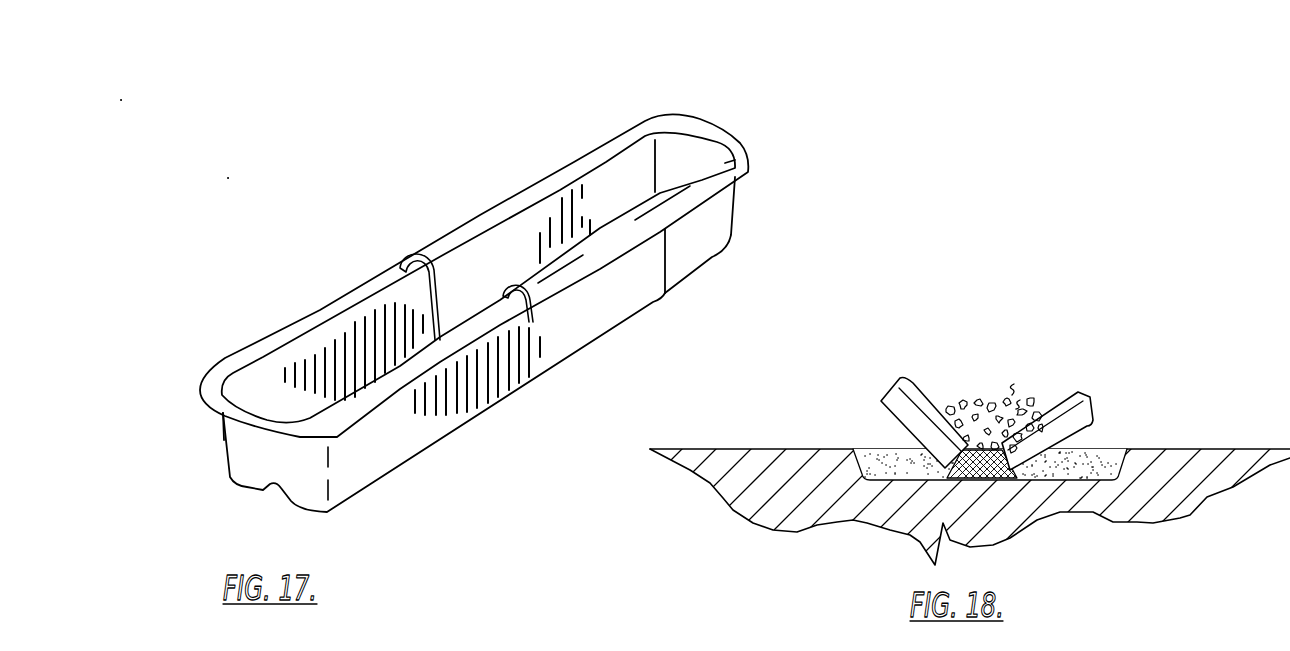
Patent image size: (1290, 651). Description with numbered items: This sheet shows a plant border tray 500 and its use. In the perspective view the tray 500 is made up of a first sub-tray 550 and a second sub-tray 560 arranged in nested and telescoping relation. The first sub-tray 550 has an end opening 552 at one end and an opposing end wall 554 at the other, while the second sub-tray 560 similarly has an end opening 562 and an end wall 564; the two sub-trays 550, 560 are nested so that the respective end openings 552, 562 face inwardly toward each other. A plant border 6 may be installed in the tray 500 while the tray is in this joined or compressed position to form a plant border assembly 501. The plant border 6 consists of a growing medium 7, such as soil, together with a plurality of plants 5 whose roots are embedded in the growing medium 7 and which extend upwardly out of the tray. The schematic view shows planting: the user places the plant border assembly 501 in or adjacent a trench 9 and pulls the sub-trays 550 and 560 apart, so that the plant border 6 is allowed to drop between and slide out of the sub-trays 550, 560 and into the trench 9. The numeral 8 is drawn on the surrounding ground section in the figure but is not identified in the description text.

In FIG. 17, the plant border tray 500 is at (471, 310).
In FIG. 17, the first sub-tray 550 is at (410, 467).
In FIG. 18, the first sub-tray 550 is at (898, 412).
In FIG. 17, the end opening 552 is at (675, 257).
In FIG. 17, the end wall 554 is at (262, 457).
In FIG. 17, the second sub-tray 560 is at (710, 262).
In FIG. 18, the second sub-tray 560 is at (1073, 427).
In FIG. 17, the end opening 562 is at (457, 292).
In FIG. 17, the end wall 564 is at (688, 152).
In FIG. 18, the plant border assembly 501 is at (883, 457).
In FIG. 18, the plants 5 is at (983, 407).
In FIG. 18, the plant border 6 is at (1019, 352).
In FIG. 18, the growing medium 7 is at (977, 452).
In FIG. 18, the ground 8 is at (1125, 512).
In FIG. 18, the trench 9 is at (1105, 460).